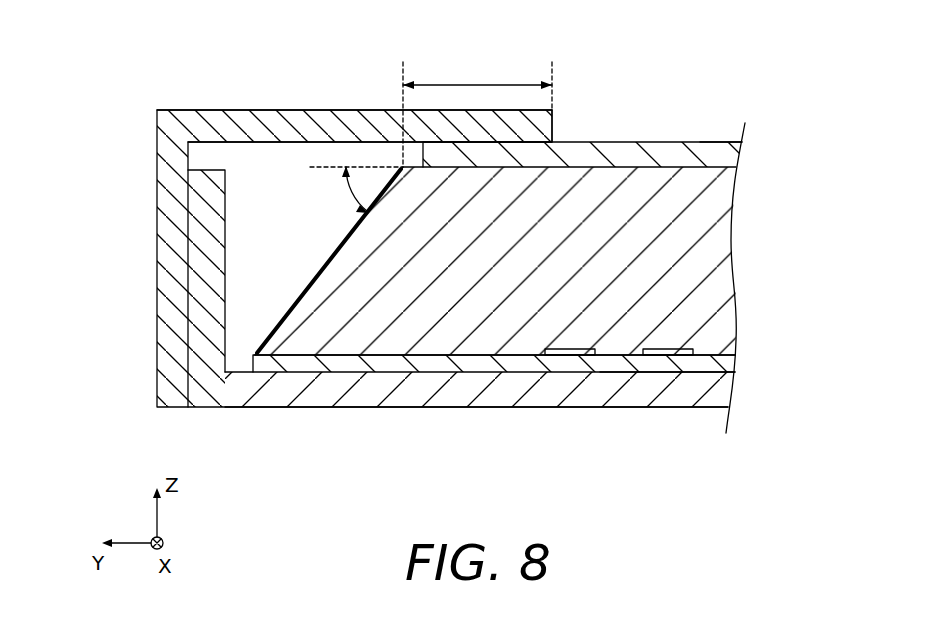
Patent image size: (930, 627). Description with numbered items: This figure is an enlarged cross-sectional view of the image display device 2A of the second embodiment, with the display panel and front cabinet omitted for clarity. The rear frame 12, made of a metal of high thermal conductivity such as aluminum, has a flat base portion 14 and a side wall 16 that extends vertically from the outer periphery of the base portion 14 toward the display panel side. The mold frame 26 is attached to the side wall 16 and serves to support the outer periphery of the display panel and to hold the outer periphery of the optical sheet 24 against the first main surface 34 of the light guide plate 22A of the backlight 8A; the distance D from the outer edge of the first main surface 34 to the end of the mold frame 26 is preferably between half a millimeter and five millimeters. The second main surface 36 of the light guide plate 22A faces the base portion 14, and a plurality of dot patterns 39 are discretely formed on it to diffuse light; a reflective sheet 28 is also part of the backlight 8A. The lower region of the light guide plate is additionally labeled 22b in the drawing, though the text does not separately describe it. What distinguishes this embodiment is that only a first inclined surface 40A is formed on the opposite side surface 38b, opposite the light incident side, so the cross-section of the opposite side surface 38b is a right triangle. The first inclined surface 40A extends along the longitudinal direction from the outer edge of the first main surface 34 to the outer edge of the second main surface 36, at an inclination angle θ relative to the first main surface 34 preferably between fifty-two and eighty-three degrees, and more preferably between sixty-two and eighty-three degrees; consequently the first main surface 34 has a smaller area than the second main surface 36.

The image display device 2A is at (724, 49).
The backlight 8A is at (229, 80).
The rear frame 12 is at (225, 395).
The base portion 14 is at (512, 392).
The side wall 16 is at (202, 275).
The light guide plate 22A is at (710, 268).
The lower surface of substrate 22b is at (390, 357).
The optical sheet 24 is at (722, 153).
The mold frame 26 is at (295, 125).
The reflective sheet 28 is at (707, 368).
The first main surface 34 is at (683, 165).
The second main surface 36 is at (455, 357).
The opposite side surface 38b is at (313, 278).
The dot patterns 39 is at (668, 357).
The first inclined surface 40A is at (335, 251).